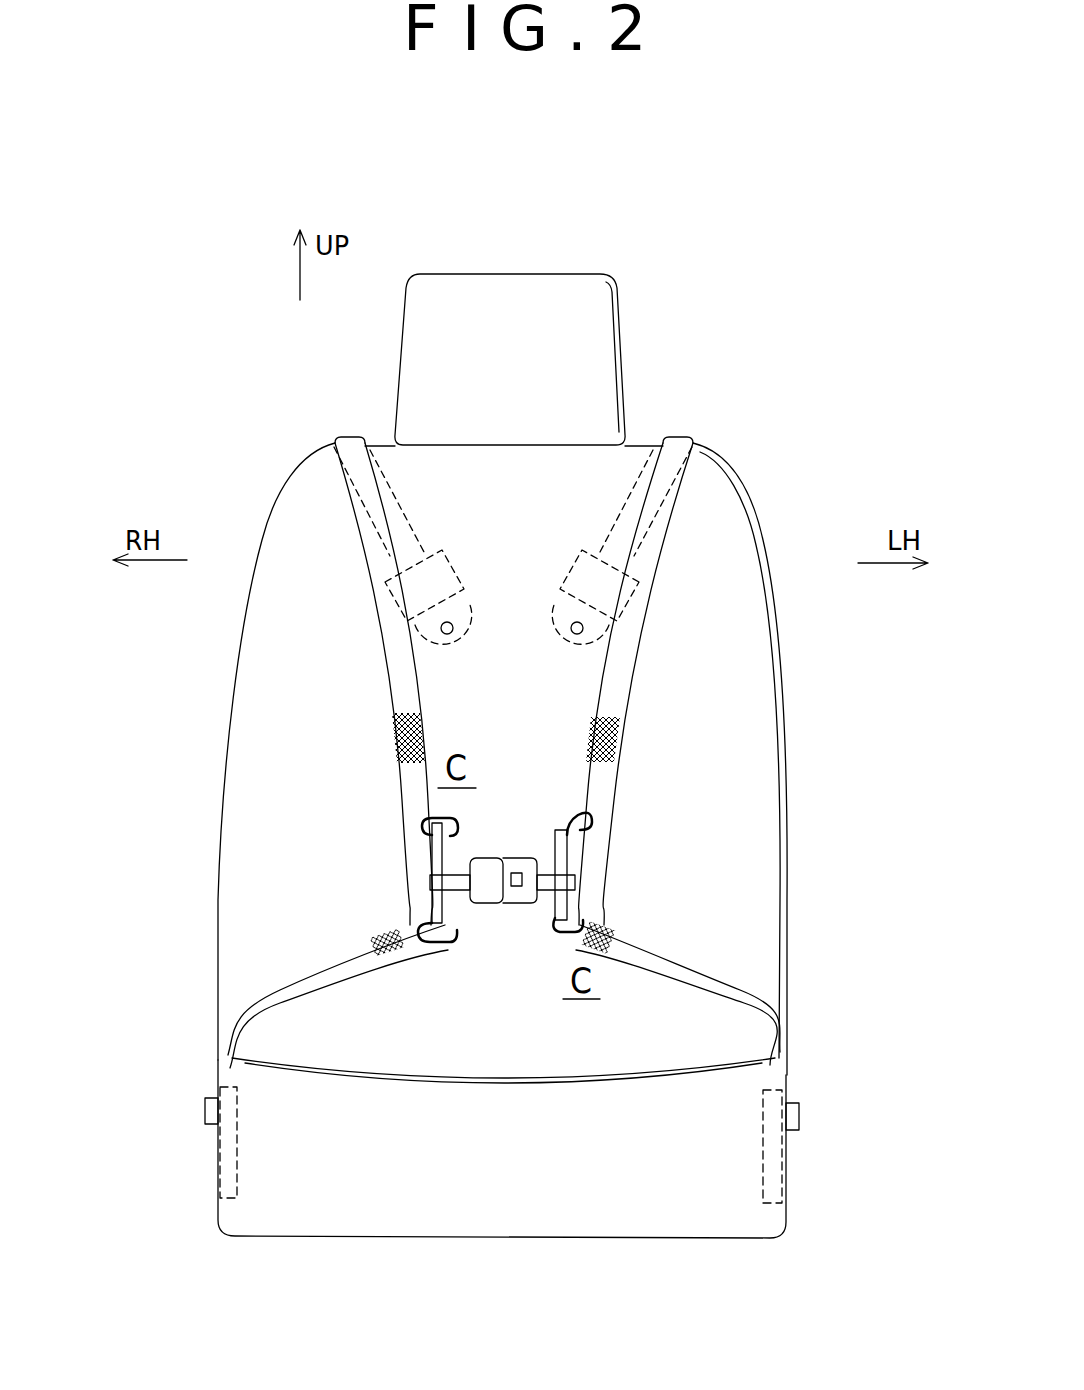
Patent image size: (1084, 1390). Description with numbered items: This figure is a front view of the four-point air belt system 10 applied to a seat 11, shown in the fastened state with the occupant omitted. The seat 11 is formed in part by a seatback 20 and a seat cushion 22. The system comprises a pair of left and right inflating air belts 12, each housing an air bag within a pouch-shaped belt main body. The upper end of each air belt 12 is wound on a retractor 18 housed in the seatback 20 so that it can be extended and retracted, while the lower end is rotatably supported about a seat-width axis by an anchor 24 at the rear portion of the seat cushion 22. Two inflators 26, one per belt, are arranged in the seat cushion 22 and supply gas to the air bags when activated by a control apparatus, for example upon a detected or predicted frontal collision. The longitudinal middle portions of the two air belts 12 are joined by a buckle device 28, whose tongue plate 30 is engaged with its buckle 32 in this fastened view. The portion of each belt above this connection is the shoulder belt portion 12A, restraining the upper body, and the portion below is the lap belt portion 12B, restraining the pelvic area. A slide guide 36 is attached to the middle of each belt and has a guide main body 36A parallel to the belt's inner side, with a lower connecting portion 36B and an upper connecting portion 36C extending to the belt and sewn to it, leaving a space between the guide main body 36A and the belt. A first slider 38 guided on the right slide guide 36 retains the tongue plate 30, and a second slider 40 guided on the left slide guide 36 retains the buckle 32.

The four-point air belt system 10 is at (499, 798).
The seat 11 is at (538, 674).
The air belt 12 is at (504, 757).
The shoulder belt portion 12A is at (428, 706).
The lap belt portion 12B is at (326, 985).
The retractor 18 is at (548, 558).
The seatback 20 is at (762, 725).
The seat cushion 22 is at (524, 1220).
The anchor 24 is at (205, 1110).
The inflator 26 is at (222, 1165).
The buckle device 28 is at (515, 968).
The tongue plate 30 is at (490, 903).
The buckle 32 is at (523, 900).
The slide guide 36 is at (496, 969).
The guide main body 36A is at (567, 853).
The lower connecting portion 36B is at (583, 921).
The upper connecting portion 36C is at (583, 803).
The first slider 38 is at (460, 875).
The second slider 40 is at (547, 875).